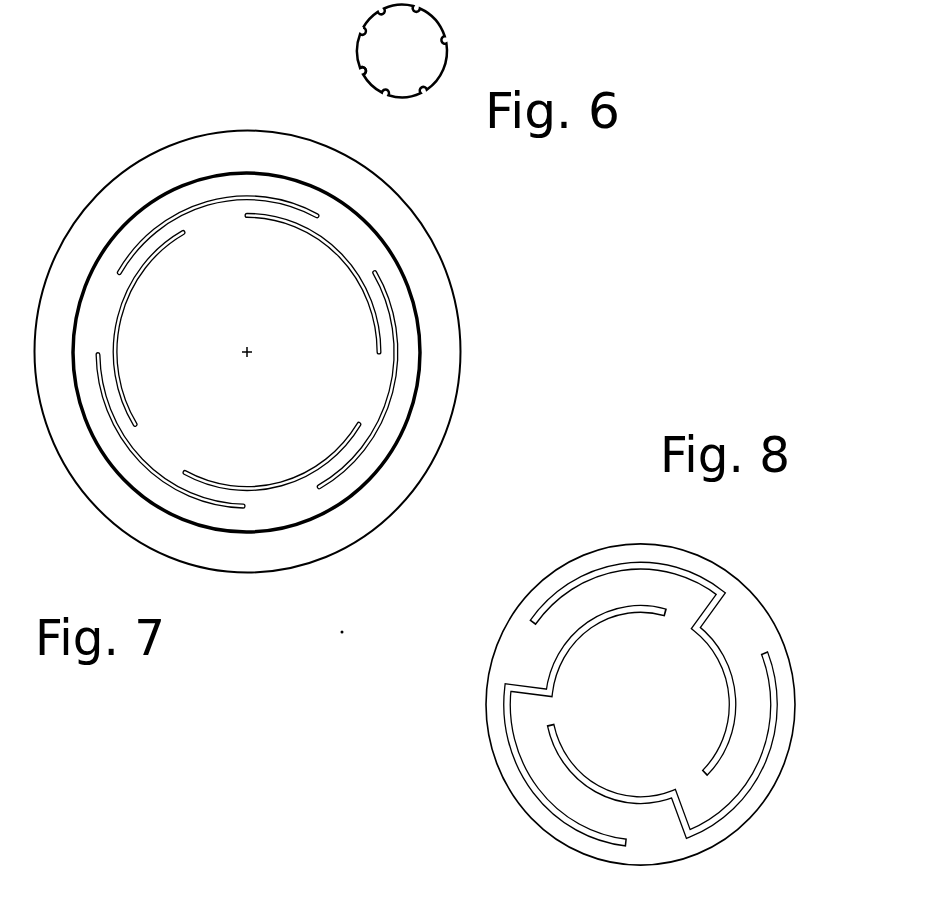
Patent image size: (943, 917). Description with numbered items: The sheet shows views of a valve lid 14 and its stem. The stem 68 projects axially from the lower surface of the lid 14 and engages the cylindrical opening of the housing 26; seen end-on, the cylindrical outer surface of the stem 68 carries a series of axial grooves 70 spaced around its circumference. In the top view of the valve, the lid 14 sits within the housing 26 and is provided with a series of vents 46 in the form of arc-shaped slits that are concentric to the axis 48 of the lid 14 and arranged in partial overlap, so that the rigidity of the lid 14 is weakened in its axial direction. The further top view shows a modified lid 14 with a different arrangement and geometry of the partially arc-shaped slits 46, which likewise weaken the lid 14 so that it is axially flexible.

In FIG. 7, the lid 14 is at (353, 392).
In FIG. 8, the lid 14 is at (735, 612).
In FIG. 7, the housing 26 is at (433, 380).
In FIG. 7, the vents 46 is at (347, 260).
In FIG. 8, the vents 46 is at (557, 602).
In FIG. 7, the axis 48 is at (248, 344).
In FIG. 6, the central stem 68 is at (388, 33).
In FIG. 6, the axial grooves 70 is at (362, 71).